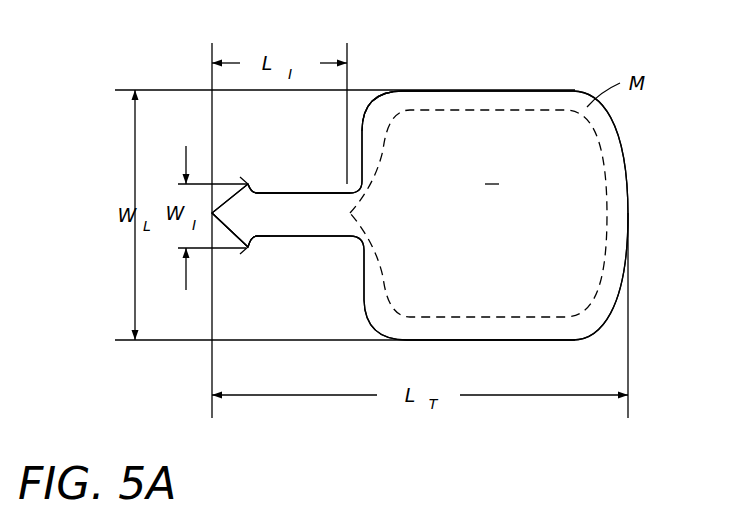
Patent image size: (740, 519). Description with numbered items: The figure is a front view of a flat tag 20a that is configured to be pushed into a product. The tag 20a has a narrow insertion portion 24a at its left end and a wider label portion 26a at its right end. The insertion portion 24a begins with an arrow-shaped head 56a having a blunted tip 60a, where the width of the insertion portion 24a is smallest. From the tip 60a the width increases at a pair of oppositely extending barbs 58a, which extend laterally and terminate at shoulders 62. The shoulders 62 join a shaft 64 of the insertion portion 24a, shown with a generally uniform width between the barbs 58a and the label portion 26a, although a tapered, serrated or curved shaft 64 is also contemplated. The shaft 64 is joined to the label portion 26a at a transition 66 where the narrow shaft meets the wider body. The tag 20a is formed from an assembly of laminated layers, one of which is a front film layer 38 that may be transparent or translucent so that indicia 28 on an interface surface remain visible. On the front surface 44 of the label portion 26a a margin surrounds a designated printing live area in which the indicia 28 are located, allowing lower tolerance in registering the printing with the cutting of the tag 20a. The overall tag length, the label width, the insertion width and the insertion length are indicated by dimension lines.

The tag 20a is at (573, 70).
The insertion portion 24a is at (298, 217).
The label portion 26a is at (497, 132).
The indicia 28 is at (553, 205).
The front film layer 38 is at (522, 281).
The front surface 44 is at (430, 143).
The arrow-shaped head 56a is at (226, 238).
The barbs 58a is at (248, 184).
The blunted tip 60a is at (212, 213).
The shoulders 62 is at (256, 192).
The shaft 64 is at (310, 203).
The lower neck transition 66 is at (371, 243).